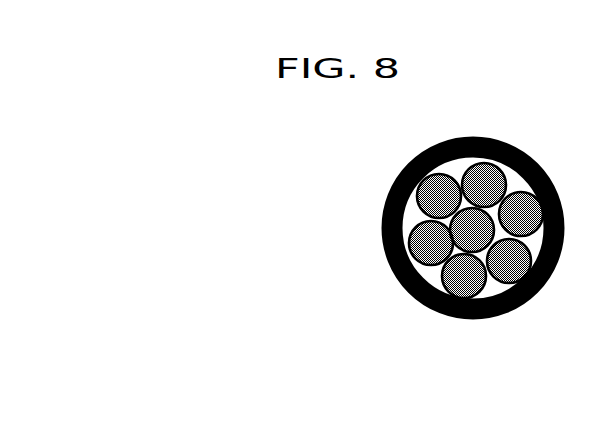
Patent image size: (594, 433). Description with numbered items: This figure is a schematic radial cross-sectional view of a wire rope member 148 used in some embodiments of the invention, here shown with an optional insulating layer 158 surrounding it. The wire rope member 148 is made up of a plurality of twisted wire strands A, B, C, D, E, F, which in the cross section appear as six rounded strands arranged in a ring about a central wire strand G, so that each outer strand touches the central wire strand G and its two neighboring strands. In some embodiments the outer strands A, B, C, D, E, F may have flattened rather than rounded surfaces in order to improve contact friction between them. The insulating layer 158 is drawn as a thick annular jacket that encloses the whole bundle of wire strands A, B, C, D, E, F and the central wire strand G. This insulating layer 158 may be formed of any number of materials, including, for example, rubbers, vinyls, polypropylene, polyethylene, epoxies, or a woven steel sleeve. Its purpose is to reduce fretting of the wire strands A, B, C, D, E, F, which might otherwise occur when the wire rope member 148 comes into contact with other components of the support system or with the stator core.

The wire rope member 148 is at (402, 211).
The insulating layer 158 is at (385, 254).
The wire strand A is at (484, 193).
The wire strand B is at (522, 222).
The wire strand C is at (510, 269).
The wire strand D is at (465, 284).
The wire strand E is at (428, 251).
The wire strand F is at (438, 204).
The central wire strand G is at (474, 238).